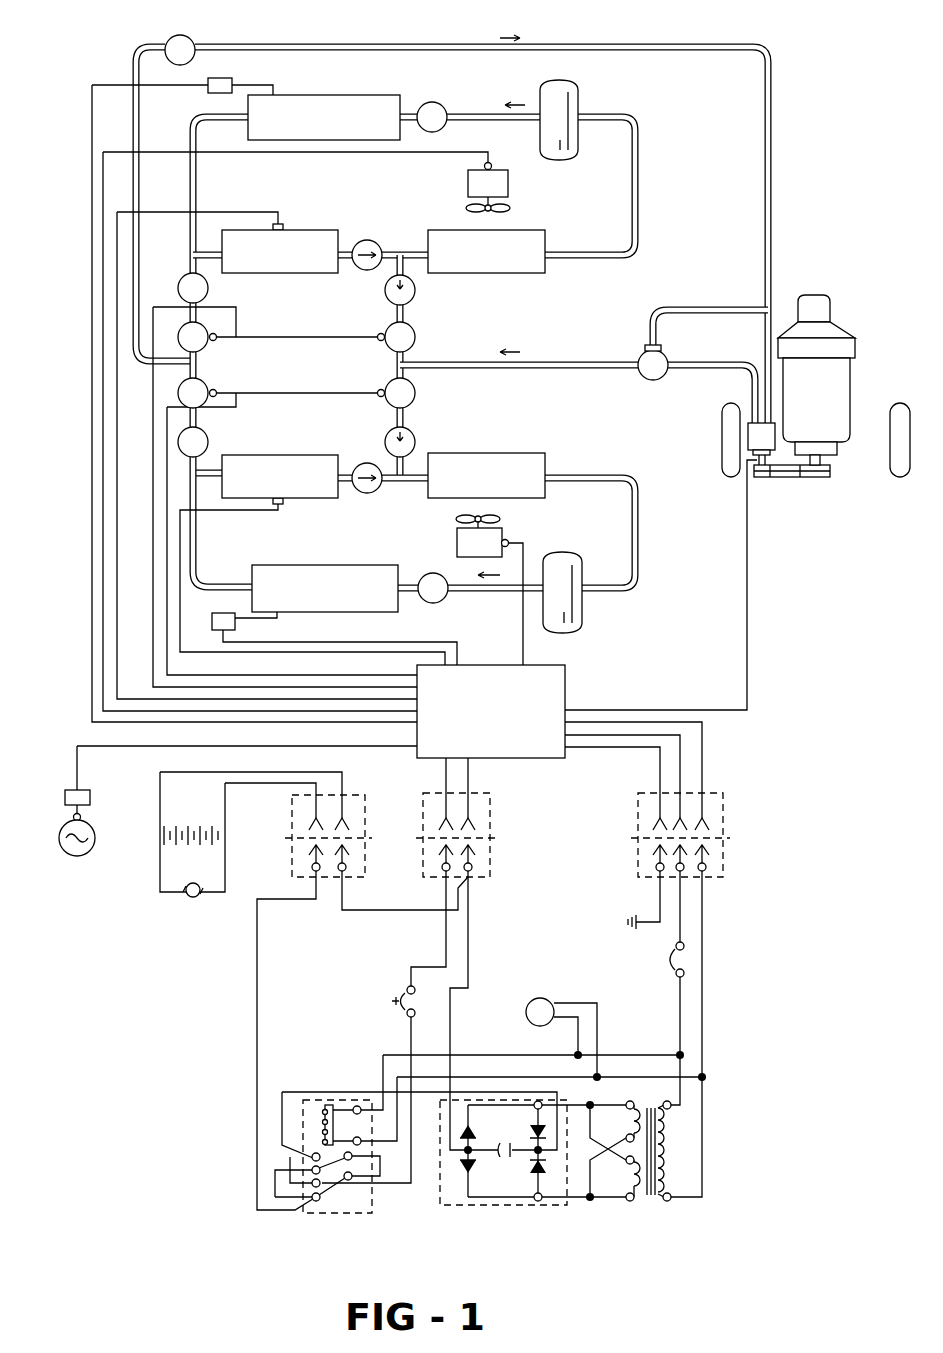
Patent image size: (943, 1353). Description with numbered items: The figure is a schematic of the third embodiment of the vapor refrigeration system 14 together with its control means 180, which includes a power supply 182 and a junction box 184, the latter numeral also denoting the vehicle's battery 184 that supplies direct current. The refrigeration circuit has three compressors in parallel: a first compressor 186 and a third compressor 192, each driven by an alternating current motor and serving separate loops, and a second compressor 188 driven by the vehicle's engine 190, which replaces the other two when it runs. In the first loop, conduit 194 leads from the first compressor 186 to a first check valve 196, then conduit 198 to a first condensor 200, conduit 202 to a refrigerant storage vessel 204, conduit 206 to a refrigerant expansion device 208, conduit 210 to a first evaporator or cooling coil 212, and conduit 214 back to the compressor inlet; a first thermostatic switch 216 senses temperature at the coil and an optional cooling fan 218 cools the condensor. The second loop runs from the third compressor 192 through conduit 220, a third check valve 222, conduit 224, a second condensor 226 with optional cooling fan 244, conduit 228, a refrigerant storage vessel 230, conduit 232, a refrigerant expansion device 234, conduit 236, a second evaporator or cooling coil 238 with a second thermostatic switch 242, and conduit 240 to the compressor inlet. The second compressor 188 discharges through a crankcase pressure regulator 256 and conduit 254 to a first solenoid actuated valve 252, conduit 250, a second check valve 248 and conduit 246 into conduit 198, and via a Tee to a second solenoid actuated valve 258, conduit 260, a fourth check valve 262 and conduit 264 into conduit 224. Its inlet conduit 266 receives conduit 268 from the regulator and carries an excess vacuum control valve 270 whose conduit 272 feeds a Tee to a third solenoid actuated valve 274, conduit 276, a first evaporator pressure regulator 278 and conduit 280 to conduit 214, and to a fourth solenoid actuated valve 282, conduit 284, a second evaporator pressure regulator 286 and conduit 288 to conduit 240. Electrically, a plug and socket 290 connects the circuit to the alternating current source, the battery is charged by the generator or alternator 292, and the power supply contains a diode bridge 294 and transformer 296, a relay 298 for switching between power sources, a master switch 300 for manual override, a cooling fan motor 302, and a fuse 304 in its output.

The refrigeration system 14 is at (795, 143).
The control means 180 is at (115, 896).
The power supply 182 is at (72, 851).
The junction box 184 is at (560, 691).
The first compressor 186 is at (250, 230).
The second compressor 188 is at (749, 437).
The vehicle's engine 190 is at (832, 414).
The third compressor 192 is at (270, 455).
The conduit 194 is at (346, 247).
The first check valve 196 is at (368, 240).
The conduit 198 is at (396, 250).
The first condensor 200 is at (515, 230).
The conduit 202 is at (639, 208).
The refrigerant storage vessel 204 is at (569, 107).
The conduit 206 is at (494, 114).
The refrigerant expansion device 208 is at (436, 102).
The conduit 210 is at (404, 112).
The first evaporator or cooling coil 212 is at (332, 95).
The conduit 214 is at (197, 178).
The first thermostatic switch 216 is at (232, 82).
The cooling fan 218 is at (490, 178).
The conduit 220 is at (349, 491).
The third check valve 222 is at (367, 494).
The conduit 224 is at (420, 480).
The second condensor 226 is at (506, 453).
The conduit 228 is at (641, 528).
The refrigerant storage vessel 230 is at (573, 601).
The conduit 232 is at (490, 594).
The refrigerant expansion device 234 is at (437, 604).
The conduit 236 is at (406, 585).
The second evaporator or cooling coil 238 is at (312, 565).
The conduit 240 is at (197, 545).
The second thermostatic switch 242 is at (235, 622).
The cooling fan 244 is at (500, 540).
The conduit 246 is at (384, 265).
The second check valve 248 is at (416, 290).
The conduit 250 is at (395, 316).
The first solenoid actuated valve 252 is at (416, 338).
The conduit 254 is at (535, 362).
The crankcase pressure regulator 256 is at (660, 352).
The second solenoid actuated valve 258 is at (416, 393).
The conduit 260 is at (396, 421).
The fourth check valve 262 is at (416, 437).
The conduit 264 is at (392, 460).
The conduit 266 is at (773, 238).
The conduit 268 is at (662, 310).
The excess vacuum control valve 270 is at (196, 41).
The conduit 272 is at (133, 188).
The third solenoid actuated valve 274 is at (209, 341).
The conduit 276 is at (200, 318).
The first evaporator pressure regulator 278 is at (208, 289).
The conduit 280 is at (190, 272).
The fourth solenoid actuated valve 282 is at (206, 392).
The conduit 284 is at (238, 408).
The second evaporator pressure regulator 286 is at (208, 441).
The conduit 288 is at (193, 455).
The plug and socket 290 is at (70, 790).
The generator or alternator 292 is at (193, 897).
The diode bridge 294 is at (508, 1207).
The transformer 296 is at (668, 1150).
The relay 298 is at (330, 1215).
The master switch 300 is at (400, 1005).
The cooling fan motor 302 is at (554, 1003).
The fuse 304 is at (668, 961).